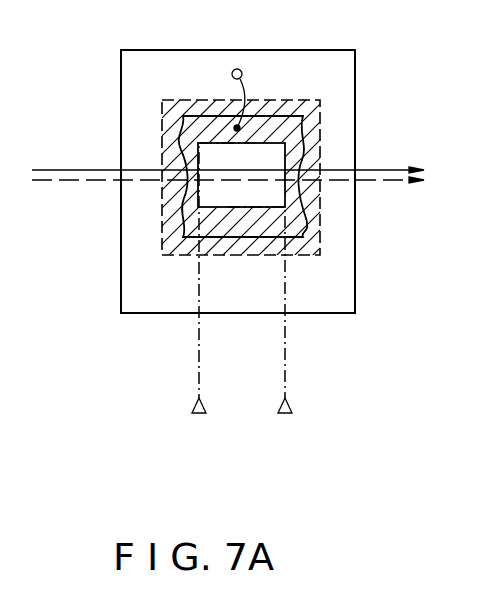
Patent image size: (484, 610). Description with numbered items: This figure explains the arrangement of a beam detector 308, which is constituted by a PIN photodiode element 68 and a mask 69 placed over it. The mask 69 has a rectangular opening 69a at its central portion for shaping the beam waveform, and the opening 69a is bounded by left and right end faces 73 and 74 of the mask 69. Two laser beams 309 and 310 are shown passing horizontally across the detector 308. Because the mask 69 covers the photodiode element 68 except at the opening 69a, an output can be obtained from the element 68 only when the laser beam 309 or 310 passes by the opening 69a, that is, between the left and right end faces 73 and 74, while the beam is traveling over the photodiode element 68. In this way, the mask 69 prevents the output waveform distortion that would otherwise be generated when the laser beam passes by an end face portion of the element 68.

The detector 308 is at (182, 58).
The PIN photodiode element 68 is at (286, 116).
The mask 69 is at (322, 137).
The rectangular opening 69a is at (255, 207).
The laser beam 309 is at (68, 168).
The laser beam 310 is at (50, 179).
The left end face 73 is at (220, 296).
The right end face 74 is at (265, 328).